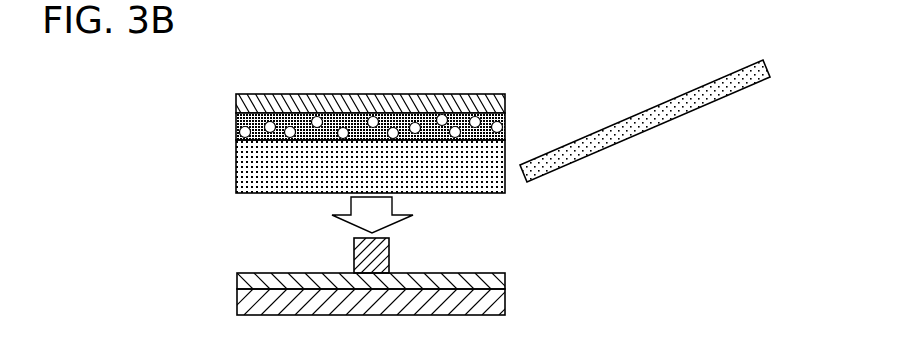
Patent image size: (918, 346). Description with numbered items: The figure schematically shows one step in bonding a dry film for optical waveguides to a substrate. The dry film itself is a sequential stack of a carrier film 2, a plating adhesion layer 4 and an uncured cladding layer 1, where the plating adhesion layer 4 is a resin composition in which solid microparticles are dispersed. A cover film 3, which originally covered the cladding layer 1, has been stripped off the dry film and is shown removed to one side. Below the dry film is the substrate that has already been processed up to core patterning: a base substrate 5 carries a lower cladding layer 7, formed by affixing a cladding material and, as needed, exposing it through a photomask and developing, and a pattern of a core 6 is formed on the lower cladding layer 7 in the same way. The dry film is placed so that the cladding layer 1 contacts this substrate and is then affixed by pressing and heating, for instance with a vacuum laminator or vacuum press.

The uncured cladding layer 1 is at (237, 177).
The carrier film 2 is at (237, 105).
The cover film 3 is at (700, 83).
The plating adhesion layer 4 is at (237, 135).
The base substrate 5 is at (505, 291).
The core 6 is at (353, 258).
The lower cladding layer 7 is at (237, 284).